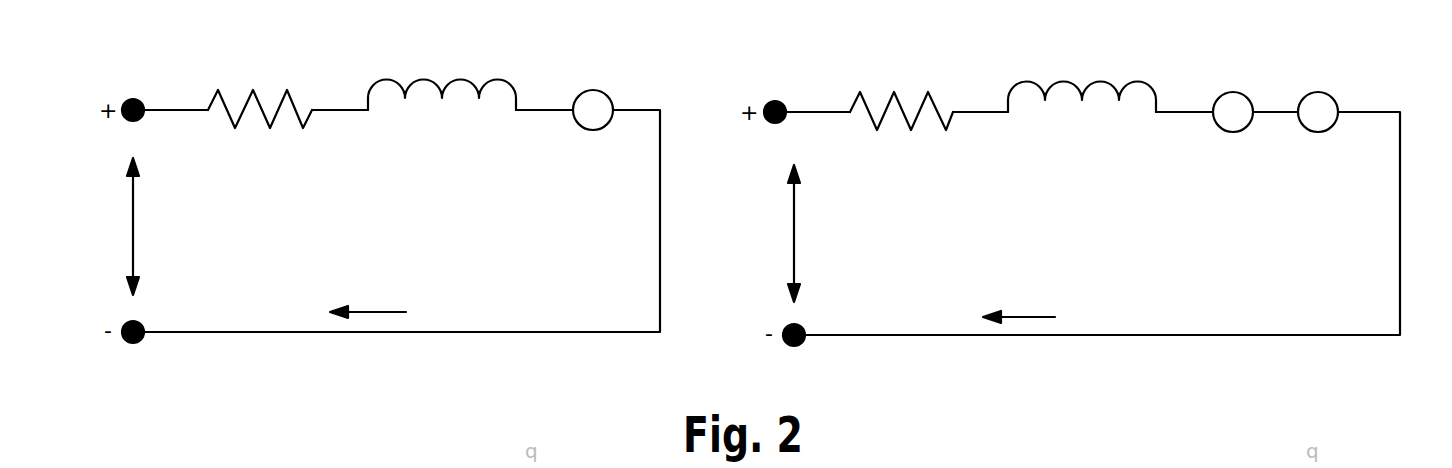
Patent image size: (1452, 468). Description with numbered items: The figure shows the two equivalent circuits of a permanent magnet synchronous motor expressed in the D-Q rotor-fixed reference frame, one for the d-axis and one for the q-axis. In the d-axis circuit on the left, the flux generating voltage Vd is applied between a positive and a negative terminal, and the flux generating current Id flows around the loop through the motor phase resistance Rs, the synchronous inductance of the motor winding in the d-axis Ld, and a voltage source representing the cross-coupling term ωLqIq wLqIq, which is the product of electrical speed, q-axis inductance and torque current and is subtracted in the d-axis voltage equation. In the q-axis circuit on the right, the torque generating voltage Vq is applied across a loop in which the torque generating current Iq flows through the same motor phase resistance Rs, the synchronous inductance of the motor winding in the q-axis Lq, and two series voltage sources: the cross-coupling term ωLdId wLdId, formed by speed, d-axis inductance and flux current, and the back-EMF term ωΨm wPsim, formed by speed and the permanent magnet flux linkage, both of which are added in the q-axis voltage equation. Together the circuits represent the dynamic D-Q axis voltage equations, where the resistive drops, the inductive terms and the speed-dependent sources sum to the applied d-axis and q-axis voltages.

The motor phase resistance Rs is at (580, 88).
The synchronous inductance of motor winding in d-axis Ld is at (442, 78).
The cross-coupling voltage term ωLqIq wLqIq is at (580, 88).
The flux generating voltage Vd is at (154, 226).
The flux generating current Id is at (368, 298).
The synchronous inductance of motor winding in q-axis Lq is at (1082, 79).
The cross-coupling voltage term ωLdId wLdId is at (1225, 95).
The back-EMF term ωΨm wPsim is at (1323, 95).
The torque generating voltage Vq is at (817, 233).
The torque generating current Iq is at (1019, 303).